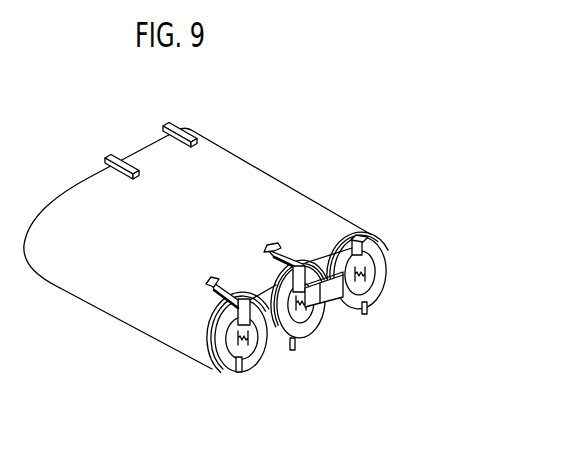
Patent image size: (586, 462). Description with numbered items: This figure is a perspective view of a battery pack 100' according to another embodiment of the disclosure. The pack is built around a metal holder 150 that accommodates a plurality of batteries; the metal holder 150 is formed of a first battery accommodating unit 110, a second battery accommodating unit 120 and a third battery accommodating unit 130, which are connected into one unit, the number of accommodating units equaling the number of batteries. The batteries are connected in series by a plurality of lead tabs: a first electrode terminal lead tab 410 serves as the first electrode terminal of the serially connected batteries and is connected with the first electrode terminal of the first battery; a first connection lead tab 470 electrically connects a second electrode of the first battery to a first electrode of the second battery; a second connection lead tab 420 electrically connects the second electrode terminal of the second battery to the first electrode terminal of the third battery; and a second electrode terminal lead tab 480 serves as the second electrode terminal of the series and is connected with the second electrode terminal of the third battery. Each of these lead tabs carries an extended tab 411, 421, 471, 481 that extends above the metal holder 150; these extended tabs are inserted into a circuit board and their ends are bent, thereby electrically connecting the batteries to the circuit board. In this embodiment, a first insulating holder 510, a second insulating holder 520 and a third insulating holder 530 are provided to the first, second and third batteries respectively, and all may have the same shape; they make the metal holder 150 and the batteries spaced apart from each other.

The battery pack 100' is at (243, 258).
The first battery accommodating unit 110 is at (133, 316).
The metal holder 150 is at (70, 287).
The second battery accommodating unit 120 is at (270, 347).
The third battery accommodating unit 130 is at (330, 308).
The first electrode terminal lead tab 410 is at (238, 373).
The extended tab 411 is at (212, 290).
The second connection lead tab 420 is at (373, 282).
The extended tab 421 is at (284, 248).
The first connection lead tab 470 is at (145, 146).
The extended tab 471 is at (118, 160).
The second electrode terminal lead tab 480 is at (185, 110).
The extended tab 481 is at (187, 132).
The first insulating holder 510 is at (222, 373).
The second insulating holder 520 is at (293, 347).
The third insulating holder 530 is at (364, 303).